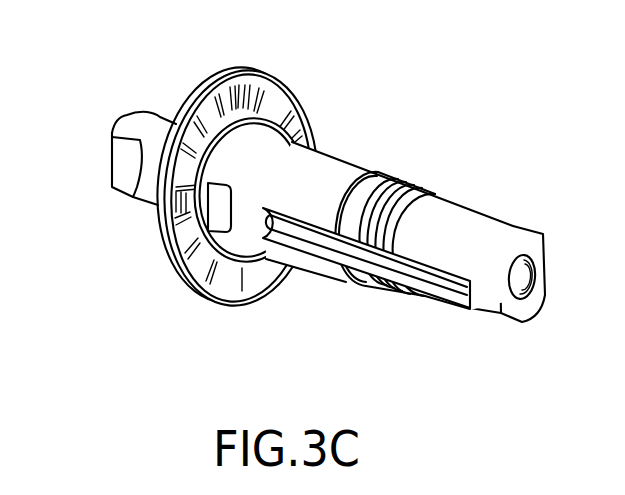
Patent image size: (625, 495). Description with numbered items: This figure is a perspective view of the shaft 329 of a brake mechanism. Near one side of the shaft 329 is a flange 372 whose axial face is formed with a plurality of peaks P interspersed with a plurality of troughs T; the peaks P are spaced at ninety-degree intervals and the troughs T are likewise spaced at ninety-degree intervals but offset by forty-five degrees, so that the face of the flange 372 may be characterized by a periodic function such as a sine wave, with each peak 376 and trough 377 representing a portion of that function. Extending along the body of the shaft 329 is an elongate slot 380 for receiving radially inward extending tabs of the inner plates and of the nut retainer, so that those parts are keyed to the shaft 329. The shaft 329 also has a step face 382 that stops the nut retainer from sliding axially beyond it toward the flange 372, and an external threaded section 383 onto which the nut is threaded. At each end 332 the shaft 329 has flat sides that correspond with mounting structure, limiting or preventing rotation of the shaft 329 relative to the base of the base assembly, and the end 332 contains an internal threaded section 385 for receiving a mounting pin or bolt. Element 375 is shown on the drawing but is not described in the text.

The end 332 is at (127, 118).
The flange 372 is at (306, 86).
The peak 376 is at (171, 124).
The trough 377 is at (232, 178).
The key tab 375 is at (220, 228).
The shaft 329 is at (350, 168).
The step face 382 is at (357, 287).
The external threaded section 383 is at (412, 183).
The elongate slot 380 is at (430, 273).
The internal threaded section 385 is at (534, 274).
The peaks P is at (242, 93).
The troughs T is at (192, 126).